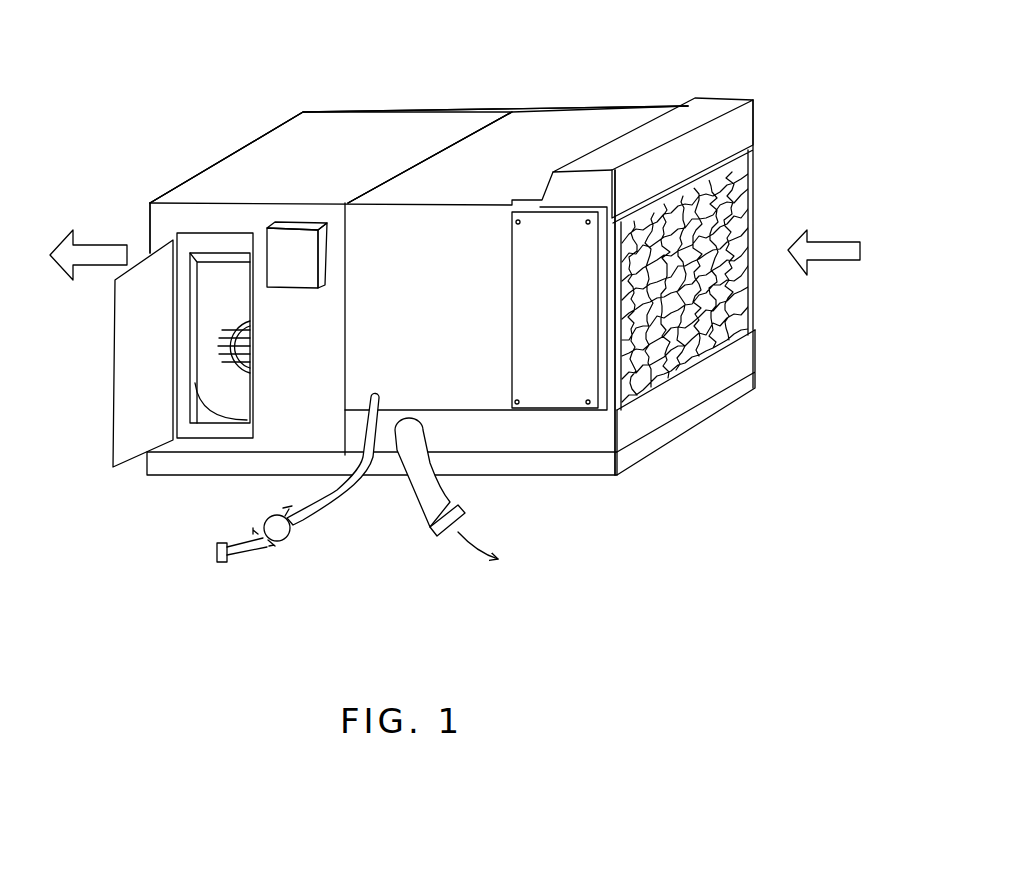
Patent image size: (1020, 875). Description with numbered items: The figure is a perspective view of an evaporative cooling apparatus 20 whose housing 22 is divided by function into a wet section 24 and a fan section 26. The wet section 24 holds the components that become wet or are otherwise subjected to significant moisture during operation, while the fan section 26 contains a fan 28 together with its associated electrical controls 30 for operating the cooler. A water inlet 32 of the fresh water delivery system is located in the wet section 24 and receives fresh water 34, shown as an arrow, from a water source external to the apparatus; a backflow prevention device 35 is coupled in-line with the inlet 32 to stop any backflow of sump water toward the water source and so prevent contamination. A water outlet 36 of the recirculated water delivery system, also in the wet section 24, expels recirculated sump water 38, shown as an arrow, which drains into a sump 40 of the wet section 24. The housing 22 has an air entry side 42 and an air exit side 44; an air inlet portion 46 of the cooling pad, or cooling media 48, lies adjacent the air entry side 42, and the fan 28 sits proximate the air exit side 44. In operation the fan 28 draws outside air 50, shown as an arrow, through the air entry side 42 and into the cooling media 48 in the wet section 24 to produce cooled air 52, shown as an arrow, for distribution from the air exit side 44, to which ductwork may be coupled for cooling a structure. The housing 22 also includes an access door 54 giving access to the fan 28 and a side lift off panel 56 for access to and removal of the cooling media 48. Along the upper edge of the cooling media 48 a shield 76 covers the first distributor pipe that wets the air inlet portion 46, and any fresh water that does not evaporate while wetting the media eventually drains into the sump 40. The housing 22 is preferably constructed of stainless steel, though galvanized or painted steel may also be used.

The evaporative cooling apparatus 20 is at (703, 655).
The housing 22 is at (602, 477).
The wet section 24 is at (530, 122).
The fan section 26 is at (327, 123).
The fan 28 is at (223, 400).
The electrical controls 30 is at (283, 277).
The water inlet 32 is at (223, 563).
The fresh water 34 is at (210, 553).
The backflow prevention device 35 is at (287, 543).
The water outlet 36 is at (463, 507).
The recirculated sump water 38 is at (457, 547).
The sump 40 is at (750, 357).
The air entry side 42 is at (799, 101).
The air exit side 44 is at (216, 136).
The air inlet portion 46 is at (755, 165).
The cooling media 48 is at (757, 195).
The outside air 50 is at (837, 240).
The cooled air 52 is at (82, 243).
The access door 54 is at (122, 417).
The side lift off panel 56 is at (524, 338).
The shield 76 is at (705, 105).